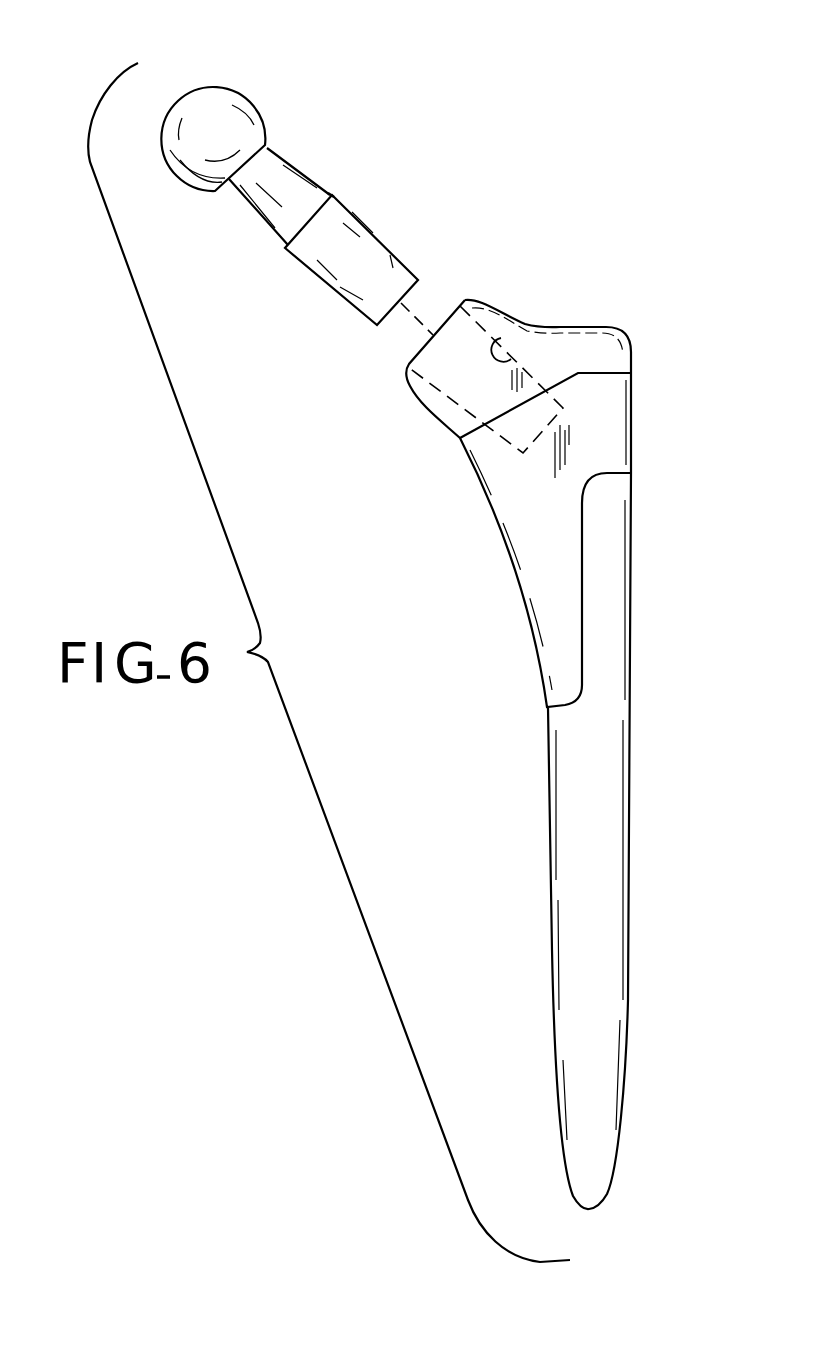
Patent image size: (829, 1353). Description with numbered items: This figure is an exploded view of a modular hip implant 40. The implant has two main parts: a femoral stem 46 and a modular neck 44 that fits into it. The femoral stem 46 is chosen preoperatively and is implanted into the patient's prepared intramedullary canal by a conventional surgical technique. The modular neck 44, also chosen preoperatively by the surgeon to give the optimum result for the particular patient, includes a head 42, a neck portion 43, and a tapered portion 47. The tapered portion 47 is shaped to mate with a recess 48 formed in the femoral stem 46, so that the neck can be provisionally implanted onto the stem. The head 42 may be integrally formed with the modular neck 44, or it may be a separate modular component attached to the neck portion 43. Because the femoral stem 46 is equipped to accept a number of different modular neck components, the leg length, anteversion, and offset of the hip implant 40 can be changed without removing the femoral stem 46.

The hip implant 40 is at (690, 181).
The head 42 is at (222, 124).
The neck portion 43 is at (265, 203).
The modular neck 44 is at (341, 179).
The femoral stem 46 is at (646, 560).
The tapered portion 47 is at (368, 258).
The recess 48 is at (497, 338).